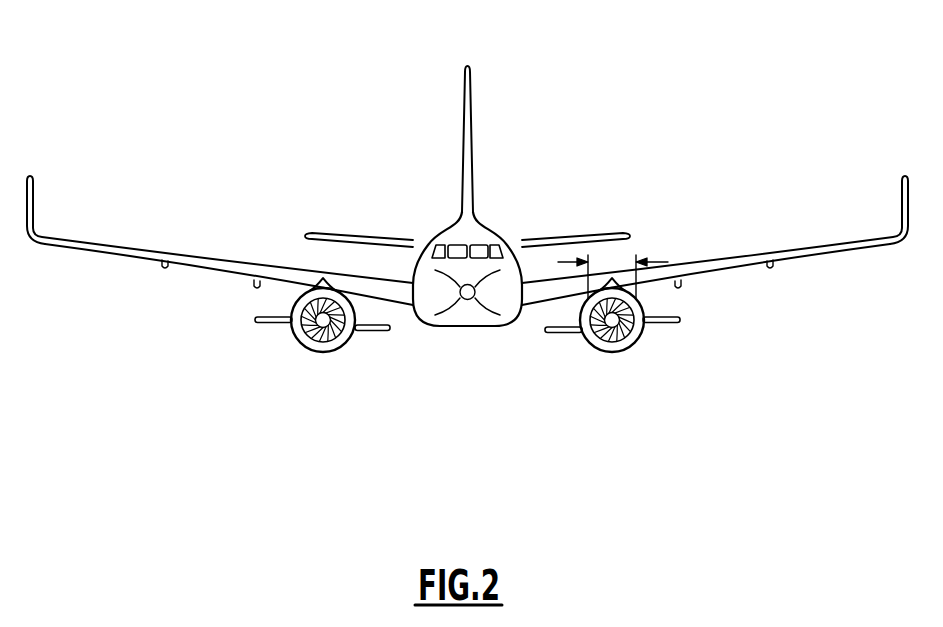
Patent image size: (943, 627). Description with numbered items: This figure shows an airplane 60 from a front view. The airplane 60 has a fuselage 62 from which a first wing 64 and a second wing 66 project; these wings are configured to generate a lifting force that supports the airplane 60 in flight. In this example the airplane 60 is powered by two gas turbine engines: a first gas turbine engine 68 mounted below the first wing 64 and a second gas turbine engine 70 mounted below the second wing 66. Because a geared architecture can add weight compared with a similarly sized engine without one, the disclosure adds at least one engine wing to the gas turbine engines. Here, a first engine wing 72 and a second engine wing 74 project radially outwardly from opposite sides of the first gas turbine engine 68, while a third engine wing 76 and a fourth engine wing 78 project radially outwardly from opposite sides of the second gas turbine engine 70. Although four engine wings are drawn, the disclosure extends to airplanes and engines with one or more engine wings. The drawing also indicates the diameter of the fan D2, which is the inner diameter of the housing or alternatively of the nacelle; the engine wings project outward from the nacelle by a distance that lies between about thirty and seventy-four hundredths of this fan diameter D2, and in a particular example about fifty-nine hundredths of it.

The airplane 60 is at (663, 95).
The fuselage 62 is at (498, 232).
The first wing 64 is at (708, 268).
The second wing 66 is at (227, 268).
The first gas turbine engine 68 is at (619, 354).
The second gas turbine engine 70 is at (323, 353).
The first engine wing 72 is at (663, 323).
The second engine wing 74 is at (554, 333).
The third engine wing 76 is at (373, 332).
The fourth engine wing 78 is at (281, 323).
The diameter of the fan D2 is at (656, 262).